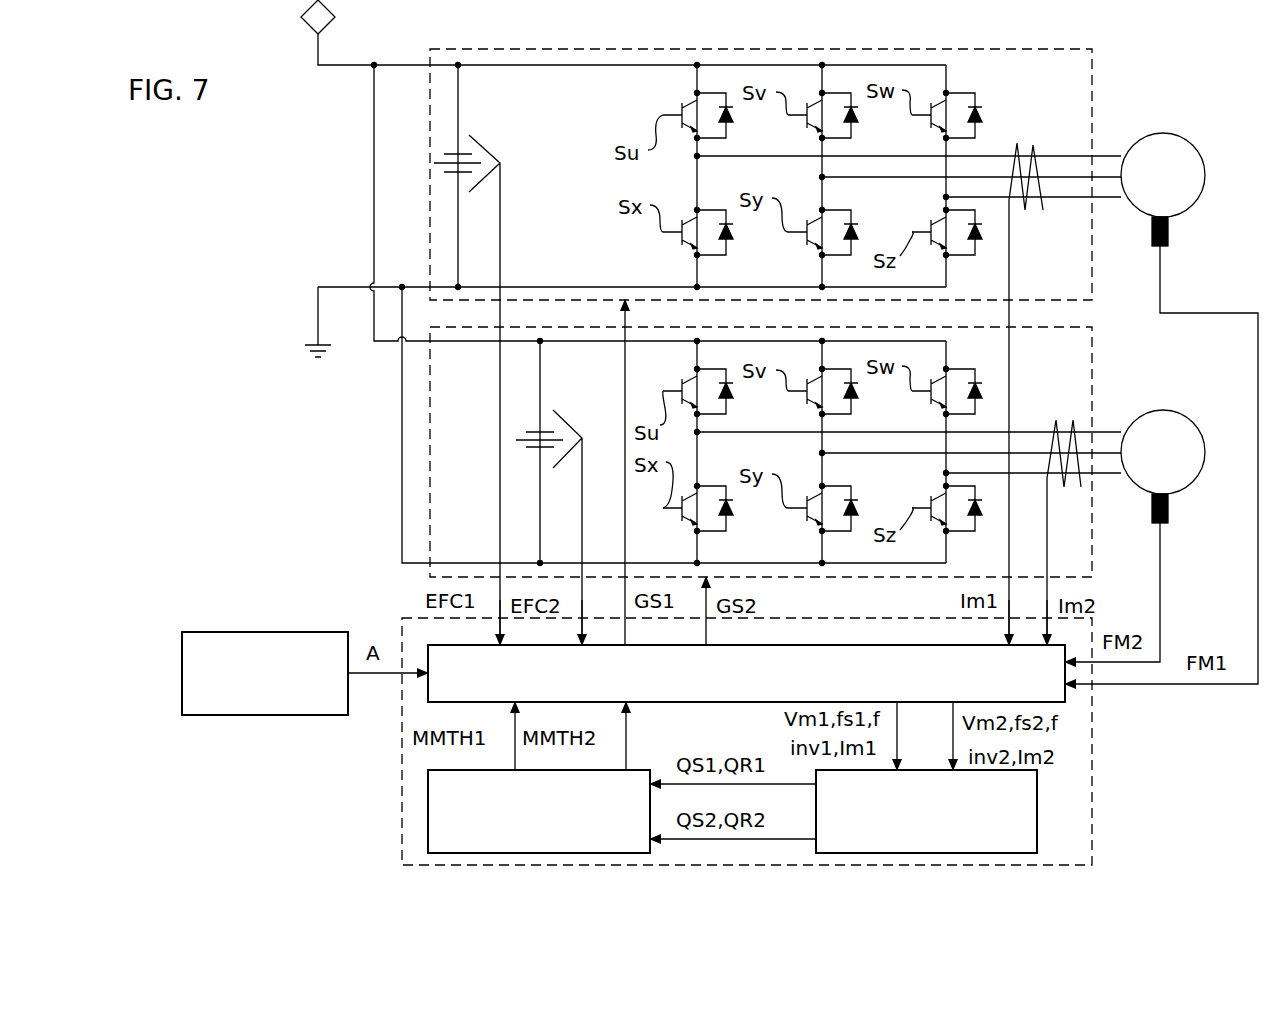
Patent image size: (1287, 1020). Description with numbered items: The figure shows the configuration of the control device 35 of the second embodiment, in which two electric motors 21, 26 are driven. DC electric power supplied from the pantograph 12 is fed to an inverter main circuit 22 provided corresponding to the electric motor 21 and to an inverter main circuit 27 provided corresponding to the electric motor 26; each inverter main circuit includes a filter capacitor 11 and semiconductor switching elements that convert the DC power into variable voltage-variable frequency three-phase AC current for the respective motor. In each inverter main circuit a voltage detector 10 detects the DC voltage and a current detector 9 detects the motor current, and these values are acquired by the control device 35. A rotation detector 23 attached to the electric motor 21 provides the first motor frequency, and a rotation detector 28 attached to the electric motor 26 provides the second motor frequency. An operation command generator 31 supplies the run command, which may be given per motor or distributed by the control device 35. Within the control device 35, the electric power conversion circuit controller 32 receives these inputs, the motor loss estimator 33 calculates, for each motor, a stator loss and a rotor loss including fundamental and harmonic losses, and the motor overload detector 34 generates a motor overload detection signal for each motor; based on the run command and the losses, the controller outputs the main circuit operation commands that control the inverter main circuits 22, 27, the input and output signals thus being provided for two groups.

The current detector 9 is at (1034, 148).
The voltage detector 10 is at (495, 145).
The filter capacitor 11 is at (468, 154).
The pantograph 12 is at (301, 17).
The electric motor 21 is at (1150, 135).
The inverter main circuit 22 is at (418, 58).
The rotation detector 23 is at (1170, 235).
The electric motor 26 is at (1148, 415).
The inverter main circuit 27 is at (425, 570).
The rotation detector 28 is at (1170, 512).
The operation command generator 31 is at (291, 632).
The electric power conversion circuit controller 32 is at (908, 645).
The motor loss estimator 33 is at (1037, 805).
The motor overload detector 34 is at (428, 790).
The control device 35 is at (1098, 732).